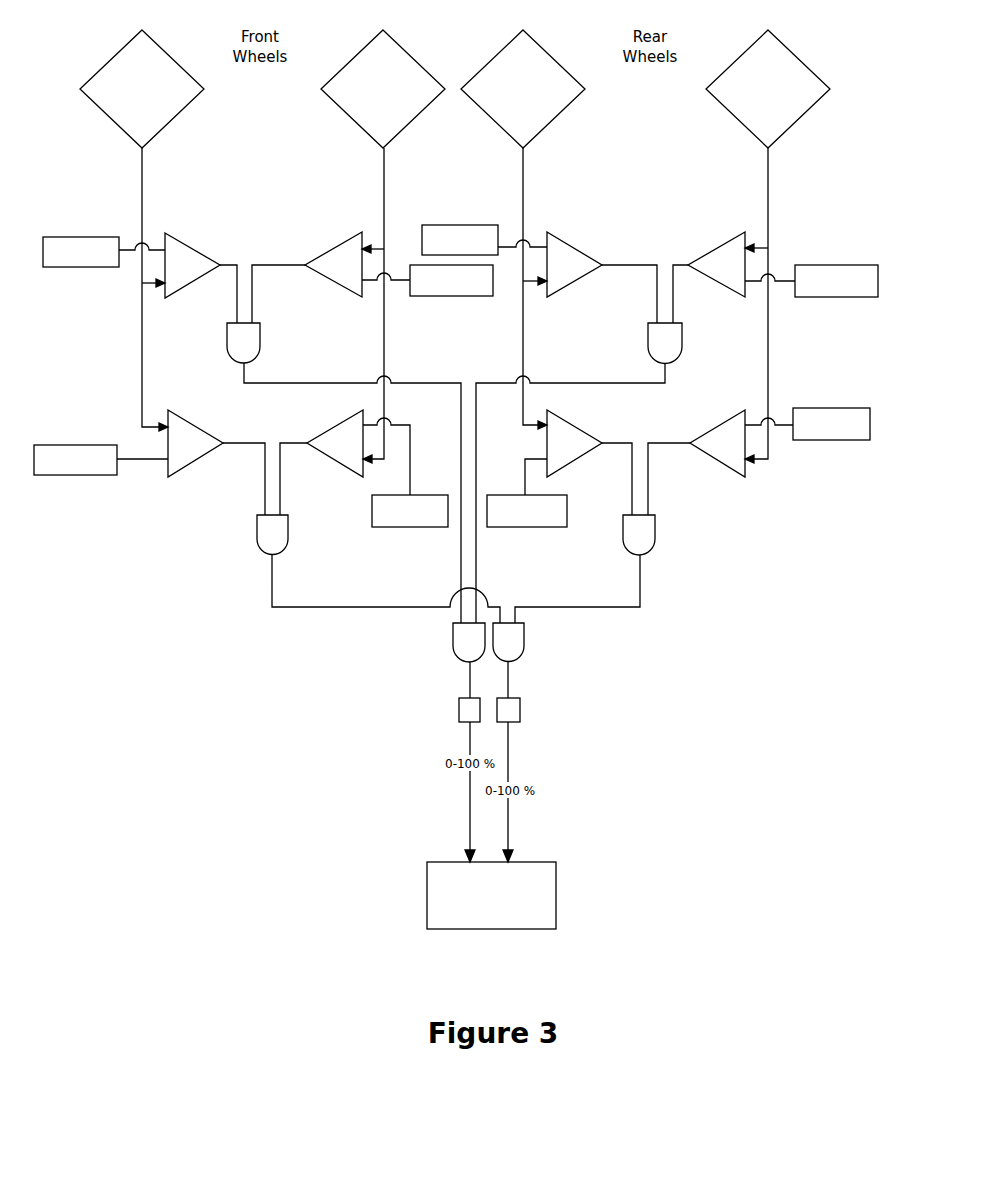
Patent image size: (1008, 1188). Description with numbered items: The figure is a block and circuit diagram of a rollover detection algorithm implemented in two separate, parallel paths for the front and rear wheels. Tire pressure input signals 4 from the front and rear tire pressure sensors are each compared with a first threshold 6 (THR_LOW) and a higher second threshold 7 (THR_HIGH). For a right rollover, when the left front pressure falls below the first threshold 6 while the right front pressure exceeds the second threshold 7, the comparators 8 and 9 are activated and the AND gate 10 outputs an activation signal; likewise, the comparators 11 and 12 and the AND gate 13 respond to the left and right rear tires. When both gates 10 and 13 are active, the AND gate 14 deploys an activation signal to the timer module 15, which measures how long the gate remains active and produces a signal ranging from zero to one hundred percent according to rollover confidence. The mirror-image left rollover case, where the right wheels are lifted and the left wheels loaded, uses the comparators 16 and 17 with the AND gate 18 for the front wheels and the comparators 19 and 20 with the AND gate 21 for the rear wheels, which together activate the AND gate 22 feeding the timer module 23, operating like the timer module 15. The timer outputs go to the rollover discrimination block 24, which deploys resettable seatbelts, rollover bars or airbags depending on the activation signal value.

The input signals 4 is at (150, 128).
The first threshold 6 is at (80, 234).
The second threshold 7 is at (457, 296).
The comparator 8 is at (188, 261).
The comparator 9 is at (342, 263).
The AND gate 10 is at (247, 342).
The comparator 11 is at (568, 262).
The comparator 12 is at (722, 262).
The AND gate 13 is at (667, 345).
The AND gate 14 is at (468, 648).
The timer module 15 is at (460, 712).
The comparator 16 is at (190, 438).
The comparator 17 is at (345, 443).
The AND gate 18 is at (275, 535).
The comparator 19 is at (572, 440).
The comparator 20 is at (723, 438).
The AND gate 21 is at (647, 532).
The AND gate 22 is at (512, 647).
The timer module 23 is at (518, 712).
The rollover discrimination block 24 is at (543, 897).